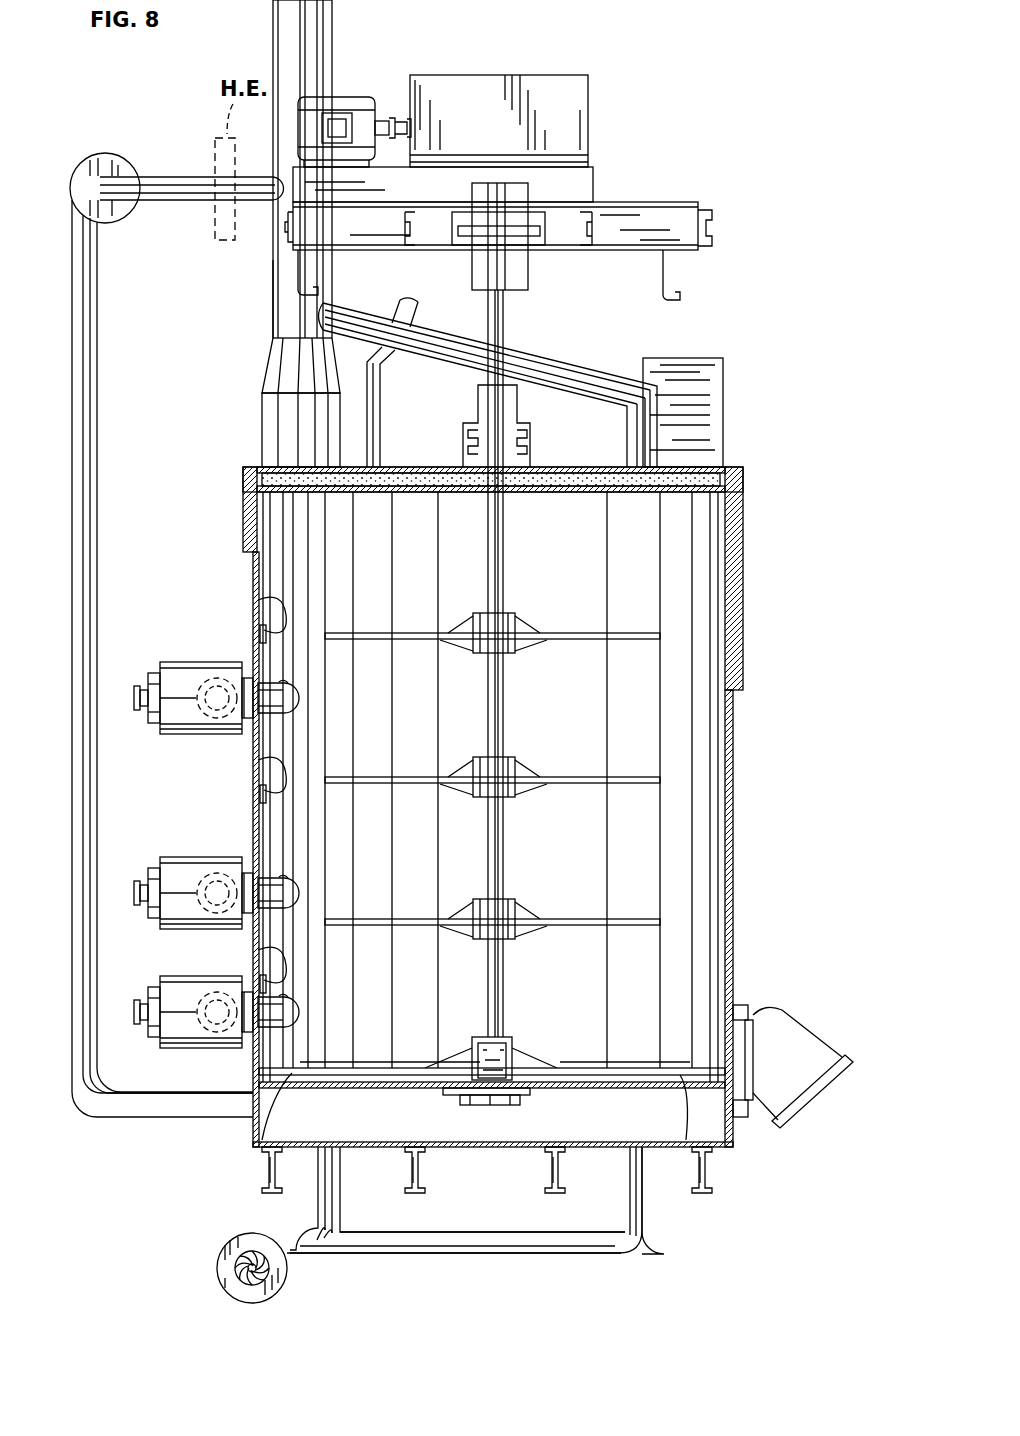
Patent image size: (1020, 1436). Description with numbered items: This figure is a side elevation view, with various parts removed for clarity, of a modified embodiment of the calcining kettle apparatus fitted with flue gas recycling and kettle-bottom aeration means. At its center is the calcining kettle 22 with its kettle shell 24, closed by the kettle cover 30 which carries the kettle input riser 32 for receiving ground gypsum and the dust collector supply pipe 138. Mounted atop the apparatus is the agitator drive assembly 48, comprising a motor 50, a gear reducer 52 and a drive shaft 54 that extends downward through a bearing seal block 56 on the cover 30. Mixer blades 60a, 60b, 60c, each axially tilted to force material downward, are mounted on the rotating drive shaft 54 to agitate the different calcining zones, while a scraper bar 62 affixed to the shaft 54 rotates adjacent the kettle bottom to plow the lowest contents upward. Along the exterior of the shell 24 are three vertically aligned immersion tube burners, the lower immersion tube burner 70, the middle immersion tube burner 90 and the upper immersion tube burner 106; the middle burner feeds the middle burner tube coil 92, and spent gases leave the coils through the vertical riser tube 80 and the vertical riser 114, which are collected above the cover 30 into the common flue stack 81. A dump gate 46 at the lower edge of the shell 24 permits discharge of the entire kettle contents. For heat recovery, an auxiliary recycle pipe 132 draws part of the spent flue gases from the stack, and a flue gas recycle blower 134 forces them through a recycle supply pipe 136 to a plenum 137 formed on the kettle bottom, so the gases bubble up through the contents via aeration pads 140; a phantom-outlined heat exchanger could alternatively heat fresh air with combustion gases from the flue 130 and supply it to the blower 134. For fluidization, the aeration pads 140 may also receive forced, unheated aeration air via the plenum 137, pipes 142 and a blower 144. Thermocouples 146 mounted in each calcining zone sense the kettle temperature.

The calcining kettle 22 is at (736, 858).
The kettle shell 24 is at (733, 907).
The kettle cover 30 is at (566, 470).
The kettle input riser 32 is at (702, 392).
The dump gate 46 is at (792, 1024).
The agitator drive assembly 48 is at (606, 118).
The motor 50 is at (342, 102).
The gear reducer 52 is at (557, 87).
The drive shaft 54 is at (505, 324).
The bearing seal block 56 is at (522, 437).
The mixer blade 60a is at (640, 928).
The mixer blade 60b is at (636, 778).
The mixer blade 60c is at (636, 634).
The scraper bar 62 is at (632, 1068).
The immersion tube burner 70 is at (179, 988).
The vertical riser tube 80 is at (315, 440).
The common flue stack 81 is at (293, 288).
The middle immersion tube burner 90 is at (188, 872).
The middle burner tube coil 92 is at (280, 440).
The upper immersion tube burner 106 is at (183, 674).
The vertical riser 114 is at (637, 443).
The flue 130 is at (272, 28).
The auxiliary recycle pipe 132 is at (173, 176).
The flue gas recycle blower 134 is at (112, 160).
The recycle supply pipe 136 is at (72, 1080).
The plenum 137 is at (505, 1112).
The dust collector supply pipe 138 is at (375, 401).
The aeration pads 140 is at (262, 1142).
The pipes 142 is at (444, 1258).
The blower 144 is at (286, 1270).
The thermocouples 146 is at (251, 634).